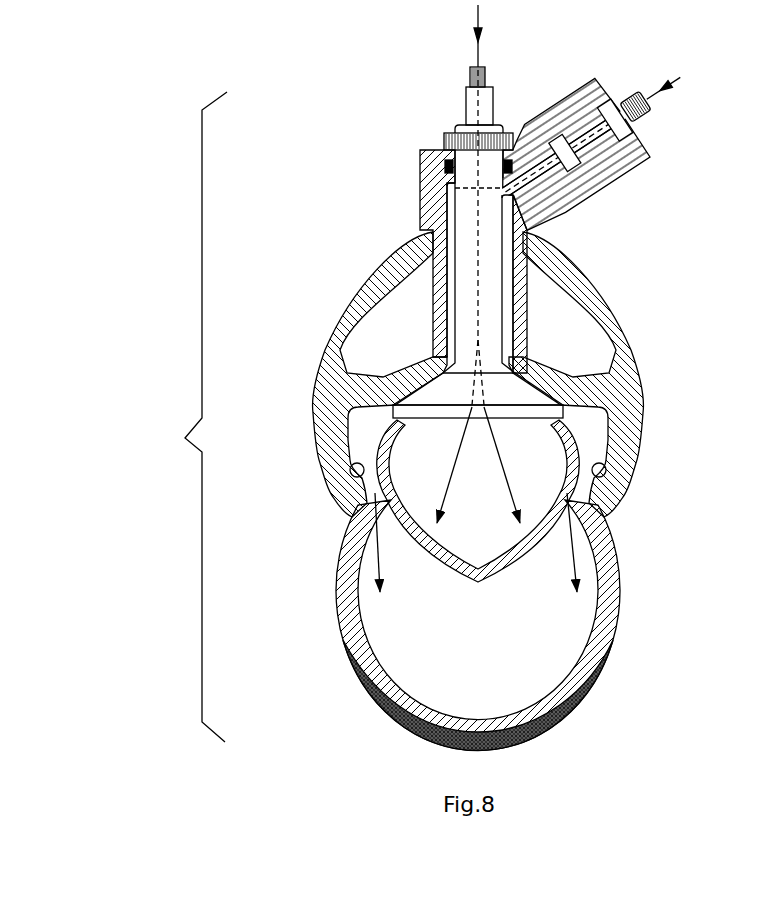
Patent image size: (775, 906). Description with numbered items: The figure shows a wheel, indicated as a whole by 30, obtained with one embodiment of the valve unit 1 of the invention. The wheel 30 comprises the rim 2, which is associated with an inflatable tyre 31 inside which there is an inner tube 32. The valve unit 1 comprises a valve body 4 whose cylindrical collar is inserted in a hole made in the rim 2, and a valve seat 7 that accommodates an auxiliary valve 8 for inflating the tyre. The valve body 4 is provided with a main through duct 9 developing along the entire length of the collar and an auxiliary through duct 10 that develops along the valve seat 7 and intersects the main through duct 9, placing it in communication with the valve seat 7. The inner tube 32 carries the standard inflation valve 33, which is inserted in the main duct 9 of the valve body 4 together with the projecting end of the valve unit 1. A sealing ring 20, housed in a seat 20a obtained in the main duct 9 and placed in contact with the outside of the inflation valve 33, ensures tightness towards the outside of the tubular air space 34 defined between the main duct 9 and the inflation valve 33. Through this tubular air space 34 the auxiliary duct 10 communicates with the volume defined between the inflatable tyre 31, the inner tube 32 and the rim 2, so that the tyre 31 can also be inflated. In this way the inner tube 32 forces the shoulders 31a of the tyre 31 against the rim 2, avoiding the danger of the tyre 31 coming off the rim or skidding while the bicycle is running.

The valve unit 1 is at (382, 135).
The rim 2 is at (615, 338).
The valve body 4 is at (443, 168).
The valve seat 7 is at (585, 122).
The auxiliary valve 8 is at (600, 143).
The main through duct 9 is at (450, 185).
The auxiliary through duct 10 is at (552, 180).
The sealing ring 20 is at (510, 157).
The seat 20a is at (447, 173).
The wheel 30 is at (185, 438).
The inflatable tyre 31 is at (613, 633).
The shoulders 31a is at (343, 507).
The inner tube 32 is at (533, 560).
The inflation valve 33 is at (490, 296).
The tubular air space 34 is at (447, 273).